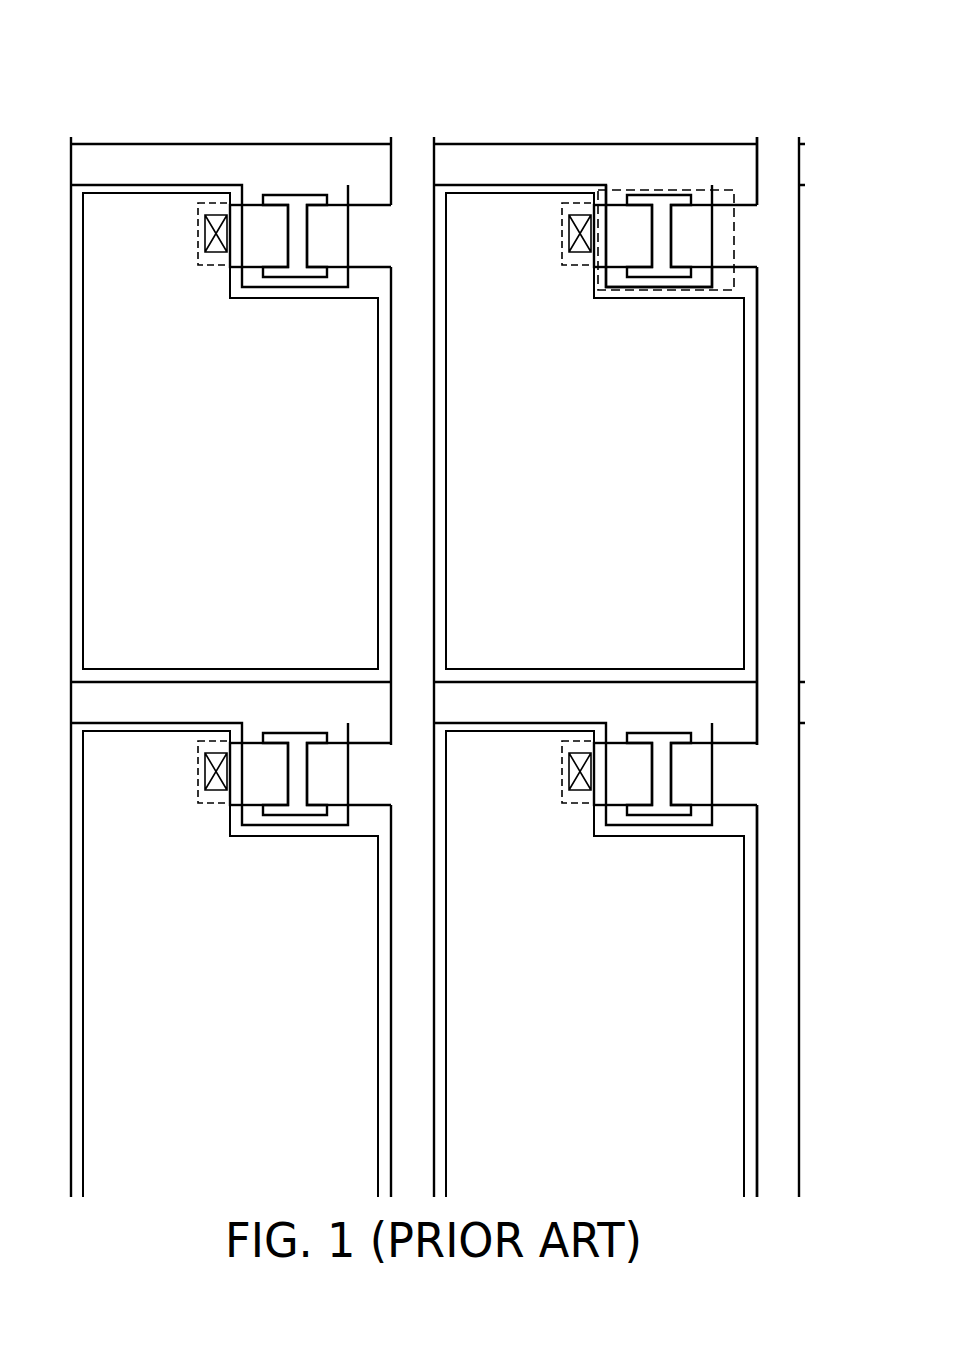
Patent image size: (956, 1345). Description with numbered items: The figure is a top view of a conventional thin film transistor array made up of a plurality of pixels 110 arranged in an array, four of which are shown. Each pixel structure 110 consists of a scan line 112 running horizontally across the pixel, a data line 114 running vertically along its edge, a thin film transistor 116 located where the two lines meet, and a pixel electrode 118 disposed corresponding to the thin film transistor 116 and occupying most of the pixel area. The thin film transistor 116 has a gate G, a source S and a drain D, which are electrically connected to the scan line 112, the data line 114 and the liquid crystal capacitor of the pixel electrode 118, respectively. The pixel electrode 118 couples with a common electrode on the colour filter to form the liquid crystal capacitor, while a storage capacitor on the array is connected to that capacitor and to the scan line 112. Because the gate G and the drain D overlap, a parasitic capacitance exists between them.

The pixel 110 is at (776, 60).
The scan line 112 is at (628, 163).
The data line 114 is at (779, 158).
The thin film transistor 116 is at (683, 188).
The pixel electrode 118 is at (515, 220).
The drain D is at (635, 219).
The source S is at (702, 247).
The gate G is at (703, 277).